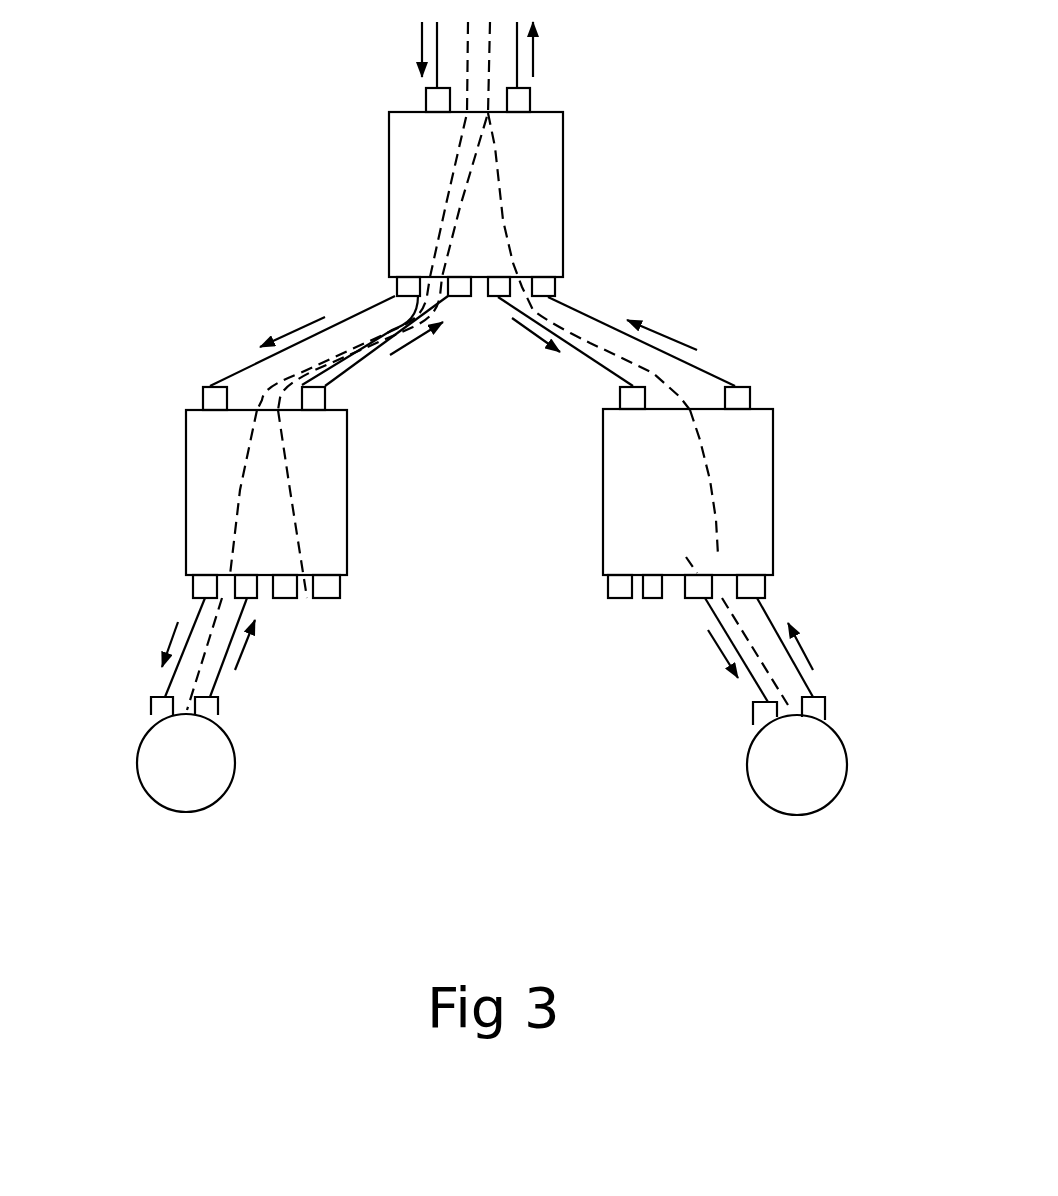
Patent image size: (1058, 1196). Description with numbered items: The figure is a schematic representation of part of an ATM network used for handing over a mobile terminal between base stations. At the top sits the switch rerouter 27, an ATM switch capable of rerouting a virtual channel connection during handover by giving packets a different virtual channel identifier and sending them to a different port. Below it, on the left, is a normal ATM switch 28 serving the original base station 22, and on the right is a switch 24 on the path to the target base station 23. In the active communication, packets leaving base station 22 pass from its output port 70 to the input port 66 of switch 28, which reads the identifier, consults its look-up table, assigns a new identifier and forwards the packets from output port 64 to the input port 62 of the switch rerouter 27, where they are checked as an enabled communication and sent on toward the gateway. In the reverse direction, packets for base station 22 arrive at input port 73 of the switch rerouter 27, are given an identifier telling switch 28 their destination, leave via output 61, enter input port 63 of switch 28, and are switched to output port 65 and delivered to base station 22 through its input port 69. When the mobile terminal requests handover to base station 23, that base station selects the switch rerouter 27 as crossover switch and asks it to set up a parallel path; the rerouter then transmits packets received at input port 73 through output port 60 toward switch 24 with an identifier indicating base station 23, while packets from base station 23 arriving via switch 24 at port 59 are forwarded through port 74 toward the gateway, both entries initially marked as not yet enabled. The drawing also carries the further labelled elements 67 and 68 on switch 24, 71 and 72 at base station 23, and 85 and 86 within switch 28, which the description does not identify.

The base station 22 is at (145, 765).
The target base station 23 is at (838, 765).
The switch 24 is at (767, 492).
The switch rerouter 27 is at (555, 198).
The switch 28 is at (193, 527).
The port 59 is at (553, 287).
The output port 60 is at (495, 297).
The output 61 is at (398, 287).
The input port 62 is at (460, 297).
The input port 63 is at (205, 393).
The output port 64 is at (320, 393).
The output port 65 is at (197, 592).
The input port 66 is at (253, 596).
The internal passage 67 is at (702, 530).
The valve block port 68 is at (753, 587).
The input port 69 is at (155, 708).
The output port 70 is at (210, 706).
The tank port 71 is at (760, 717).
The tank port 72 is at (822, 710).
The input port 73 is at (432, 97).
The port 74 is at (528, 98).
The internal passage 85 is at (243, 483).
The internal passage 86 is at (287, 470).